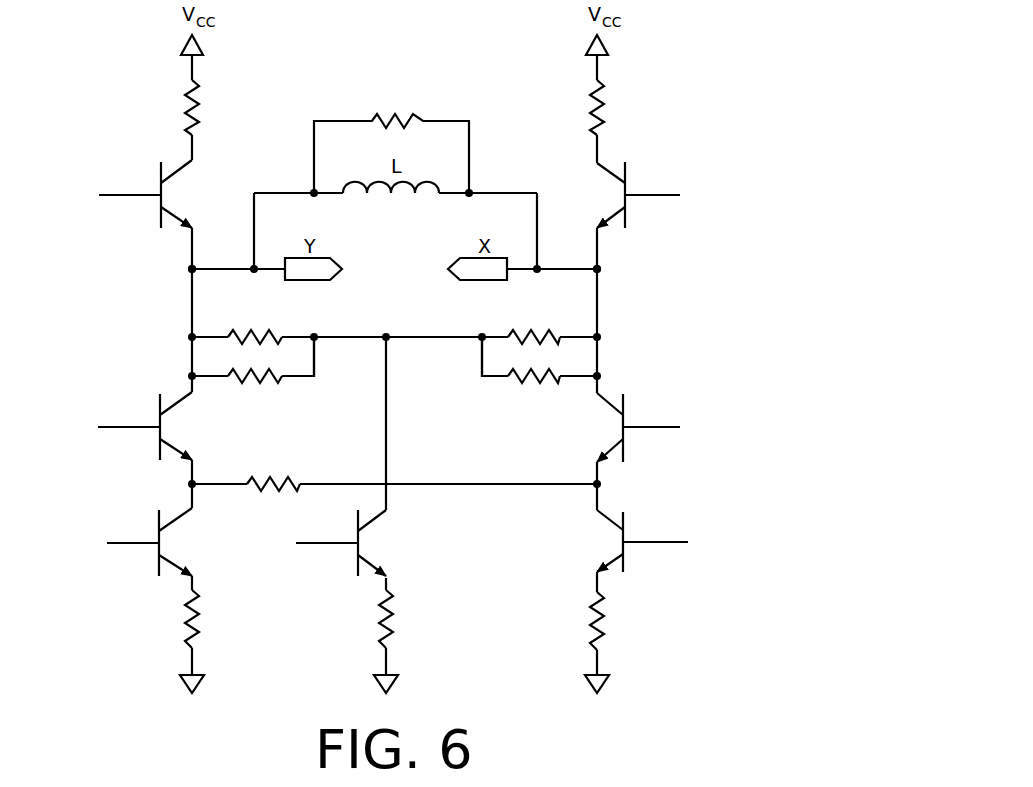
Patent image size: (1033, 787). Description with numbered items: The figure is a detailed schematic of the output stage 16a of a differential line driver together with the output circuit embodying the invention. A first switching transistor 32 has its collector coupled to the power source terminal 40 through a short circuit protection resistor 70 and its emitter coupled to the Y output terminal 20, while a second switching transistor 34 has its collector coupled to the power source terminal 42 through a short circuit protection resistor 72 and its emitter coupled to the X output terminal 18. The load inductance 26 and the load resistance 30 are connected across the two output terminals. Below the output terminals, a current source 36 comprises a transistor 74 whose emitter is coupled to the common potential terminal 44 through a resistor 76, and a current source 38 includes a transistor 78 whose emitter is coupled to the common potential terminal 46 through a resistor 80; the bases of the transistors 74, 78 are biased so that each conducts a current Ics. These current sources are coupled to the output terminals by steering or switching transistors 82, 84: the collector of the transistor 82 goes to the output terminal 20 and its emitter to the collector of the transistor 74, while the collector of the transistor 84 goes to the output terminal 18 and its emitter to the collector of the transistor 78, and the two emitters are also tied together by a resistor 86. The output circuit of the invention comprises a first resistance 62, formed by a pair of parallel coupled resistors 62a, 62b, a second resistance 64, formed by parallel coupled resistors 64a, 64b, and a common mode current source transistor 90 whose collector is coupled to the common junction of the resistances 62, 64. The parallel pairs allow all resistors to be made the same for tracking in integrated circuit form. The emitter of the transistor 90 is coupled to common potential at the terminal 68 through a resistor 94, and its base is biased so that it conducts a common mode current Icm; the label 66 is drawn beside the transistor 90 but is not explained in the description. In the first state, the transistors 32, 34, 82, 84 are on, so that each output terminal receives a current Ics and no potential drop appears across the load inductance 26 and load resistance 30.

The output stage 16a is at (703, 108).
The X output terminal 18 is at (602, 272).
The Y output terminal 20 is at (188, 270).
The load inductance 26 is at (388, 207).
The load resistance 30 is at (378, 118).
The first switching transistor 32 is at (147, 175).
The second switching transistor 34 is at (645, 168).
The current source 36 is at (120, 510).
The current source 38 is at (650, 512).
The power source terminal 40 is at (175, 45).
The power source terminal 42 is at (607, 42).
The common potential terminal 44 is at (200, 684).
The common potential terminal 46 is at (607, 686).
The first resistance 62 is at (252, 318).
The resistor 62a is at (268, 336).
The resistor 62b is at (258, 380).
The second resistance 64 is at (540, 292).
The resistor 64a is at (532, 335).
The resistor 64b is at (540, 382).
The transistor 66 is at (340, 572).
The common potential terminal 68 is at (405, 685).
The short circuit protection resistor 70 is at (184, 104).
The short circuit protection resistor 72 is at (608, 104).
The transistor 74 is at (150, 560).
The resistor 76 is at (196, 622).
The transistor 78 is at (625, 557).
The resistor 80 is at (605, 622).
The steering transistor 82 is at (153, 412).
The steering transistor 84 is at (640, 412).
The resistor 86 is at (270, 476).
The common mode current source transistor 90 is at (352, 523).
The resistor 94 is at (395, 620).